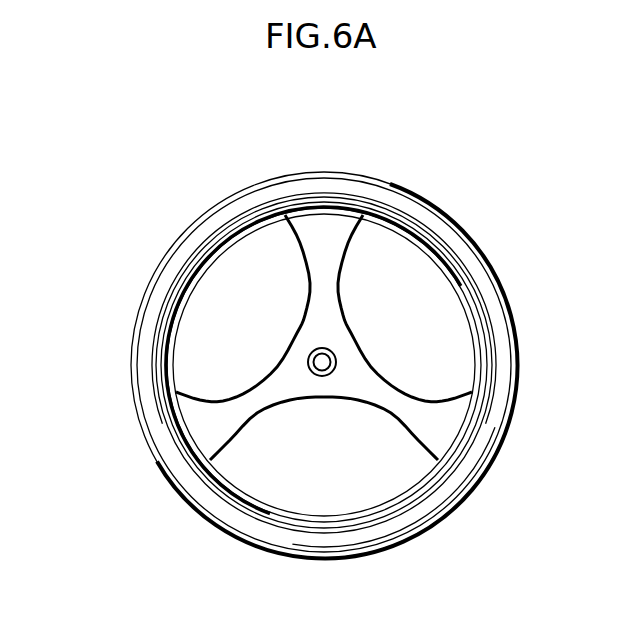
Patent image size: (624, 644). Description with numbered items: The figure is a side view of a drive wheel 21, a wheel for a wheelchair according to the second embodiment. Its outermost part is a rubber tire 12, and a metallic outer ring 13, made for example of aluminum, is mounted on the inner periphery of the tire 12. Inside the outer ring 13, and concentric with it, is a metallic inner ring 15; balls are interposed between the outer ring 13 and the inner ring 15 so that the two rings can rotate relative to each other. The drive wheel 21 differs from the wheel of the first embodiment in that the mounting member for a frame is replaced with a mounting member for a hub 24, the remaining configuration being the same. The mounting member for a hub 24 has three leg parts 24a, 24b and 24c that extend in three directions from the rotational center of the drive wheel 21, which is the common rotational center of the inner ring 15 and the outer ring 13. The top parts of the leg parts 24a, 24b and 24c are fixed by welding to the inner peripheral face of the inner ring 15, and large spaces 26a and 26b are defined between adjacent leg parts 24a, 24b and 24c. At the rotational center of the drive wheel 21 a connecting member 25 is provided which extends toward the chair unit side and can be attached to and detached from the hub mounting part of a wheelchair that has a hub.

The drive wheel 21 is at (124, 193).
The rubber tire 12 is at (485, 274).
The outer ring 13 is at (490, 323).
The inner ring 15 is at (473, 350).
The mounting member for a hub 24 is at (316, 283).
The leg part 24a is at (218, 405).
The leg part 24b is at (333, 237).
The leg part 24c is at (438, 402).
The connecting member 25 is at (322, 376).
The space 26a is at (190, 313).
The space 26b is at (417, 254).